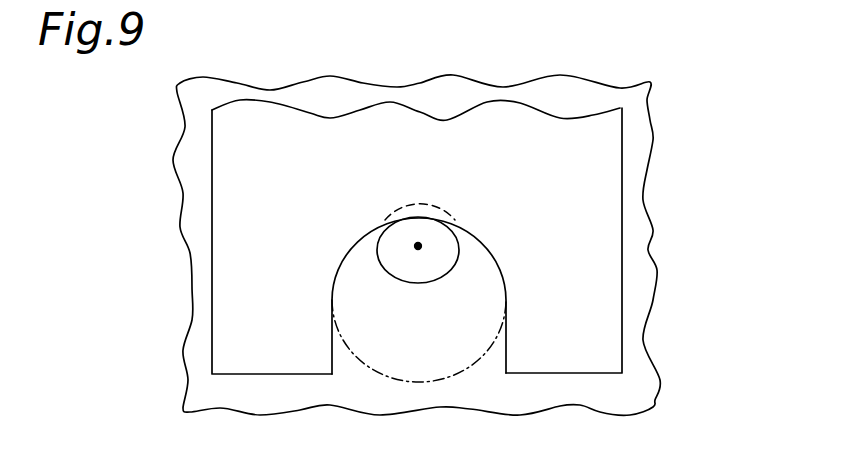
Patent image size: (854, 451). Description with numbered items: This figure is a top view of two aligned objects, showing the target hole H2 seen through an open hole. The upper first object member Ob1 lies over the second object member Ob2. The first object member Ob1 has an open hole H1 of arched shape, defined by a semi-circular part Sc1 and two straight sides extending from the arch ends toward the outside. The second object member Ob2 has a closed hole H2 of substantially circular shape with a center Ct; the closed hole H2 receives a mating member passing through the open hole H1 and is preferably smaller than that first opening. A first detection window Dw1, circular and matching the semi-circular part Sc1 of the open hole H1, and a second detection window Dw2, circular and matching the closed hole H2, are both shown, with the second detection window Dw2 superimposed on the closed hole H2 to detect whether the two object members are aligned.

The first object member Ob1 is at (590, 170).
The second object member Ob2 is at (638, 282).
The center Ct is at (418, 246).
The semi-circular part Sc1 is at (365, 234).
The first detection window Dw1 is at (483, 358).
The second detection window Dw2 is at (383, 242).
The open hole H1 is at (332, 352).
The closed hole H2 is at (422, 279).